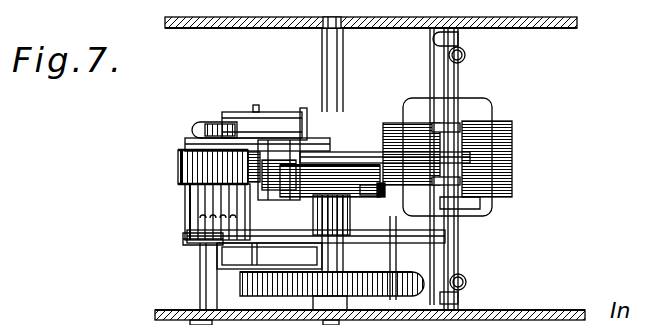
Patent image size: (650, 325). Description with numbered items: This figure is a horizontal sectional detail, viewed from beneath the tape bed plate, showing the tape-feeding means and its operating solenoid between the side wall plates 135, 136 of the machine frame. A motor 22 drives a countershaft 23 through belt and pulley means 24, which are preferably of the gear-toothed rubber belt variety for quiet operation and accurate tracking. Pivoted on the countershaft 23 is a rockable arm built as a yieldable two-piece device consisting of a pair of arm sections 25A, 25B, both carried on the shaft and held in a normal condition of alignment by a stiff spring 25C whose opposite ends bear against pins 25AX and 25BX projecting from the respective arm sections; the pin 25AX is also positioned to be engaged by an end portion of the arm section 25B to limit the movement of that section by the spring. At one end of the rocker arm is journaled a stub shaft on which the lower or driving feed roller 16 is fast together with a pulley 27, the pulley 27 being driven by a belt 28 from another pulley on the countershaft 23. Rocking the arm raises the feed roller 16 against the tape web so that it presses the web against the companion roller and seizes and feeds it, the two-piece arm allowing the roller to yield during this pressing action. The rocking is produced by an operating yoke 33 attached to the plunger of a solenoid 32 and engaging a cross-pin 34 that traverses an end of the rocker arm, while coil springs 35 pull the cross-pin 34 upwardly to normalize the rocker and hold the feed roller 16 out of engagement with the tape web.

The lower or driving feed roller 16 is at (178, 166).
The motor 22 is at (252, 124).
The countershaft 23 is at (330, 83).
The belt and pulley means 24 is at (353, 263).
The arm section 25A is at (283, 143).
The pin 25AX is at (183, 235).
The arm section 25B is at (403, 158).
The pin 25BX is at (490, 205).
The stiff spring 25C is at (356, 190).
The pulley 27 is at (190, 196).
The belt 28 is at (355, 223).
The solenoid 32 is at (490, 108).
The operating yoke 33 is at (470, 156).
The cross-pin 34 is at (455, 253).
The coil springs 35 is at (466, 56).
The side wall plate 135 is at (525, 310).
The side wall plate 136 is at (560, 28).